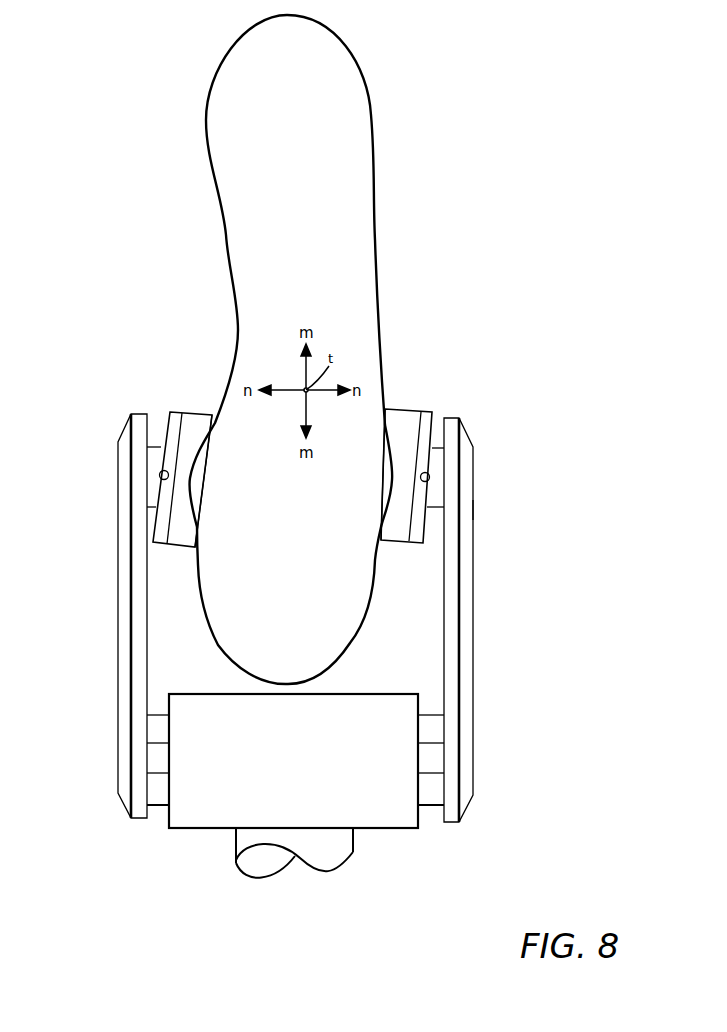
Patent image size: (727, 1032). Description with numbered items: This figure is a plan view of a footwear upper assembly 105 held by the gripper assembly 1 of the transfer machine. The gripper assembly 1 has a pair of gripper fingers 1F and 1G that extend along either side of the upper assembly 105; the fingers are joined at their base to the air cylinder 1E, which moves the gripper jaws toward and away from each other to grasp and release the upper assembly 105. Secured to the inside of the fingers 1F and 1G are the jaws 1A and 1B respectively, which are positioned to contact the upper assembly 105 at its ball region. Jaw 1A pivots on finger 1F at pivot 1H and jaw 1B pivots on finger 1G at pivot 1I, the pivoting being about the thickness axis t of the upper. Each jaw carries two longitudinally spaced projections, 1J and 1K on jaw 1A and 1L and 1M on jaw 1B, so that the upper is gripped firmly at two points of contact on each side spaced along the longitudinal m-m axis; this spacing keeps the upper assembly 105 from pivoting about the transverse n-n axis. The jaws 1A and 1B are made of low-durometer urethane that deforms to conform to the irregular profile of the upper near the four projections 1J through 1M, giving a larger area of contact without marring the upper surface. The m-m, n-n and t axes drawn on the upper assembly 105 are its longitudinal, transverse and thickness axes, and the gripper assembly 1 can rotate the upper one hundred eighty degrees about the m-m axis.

The footwear upper assembly 105 is at (320, 197).
The gripper assembly 1 is at (489, 441).
The gripper jaw 1A is at (421, 409).
The gripper jaw 1B is at (193, 415).
The air cylinder 1E is at (301, 770).
The gripper finger 1F is at (471, 592).
The gripper finger 1G is at (128, 566).
The pivot 1H is at (430, 478).
The pivot 1I is at (159, 476).
The projection 1J is at (387, 425).
The projection 1K is at (382, 530).
The projection 1L is at (208, 427).
The projection 1M is at (187, 532).